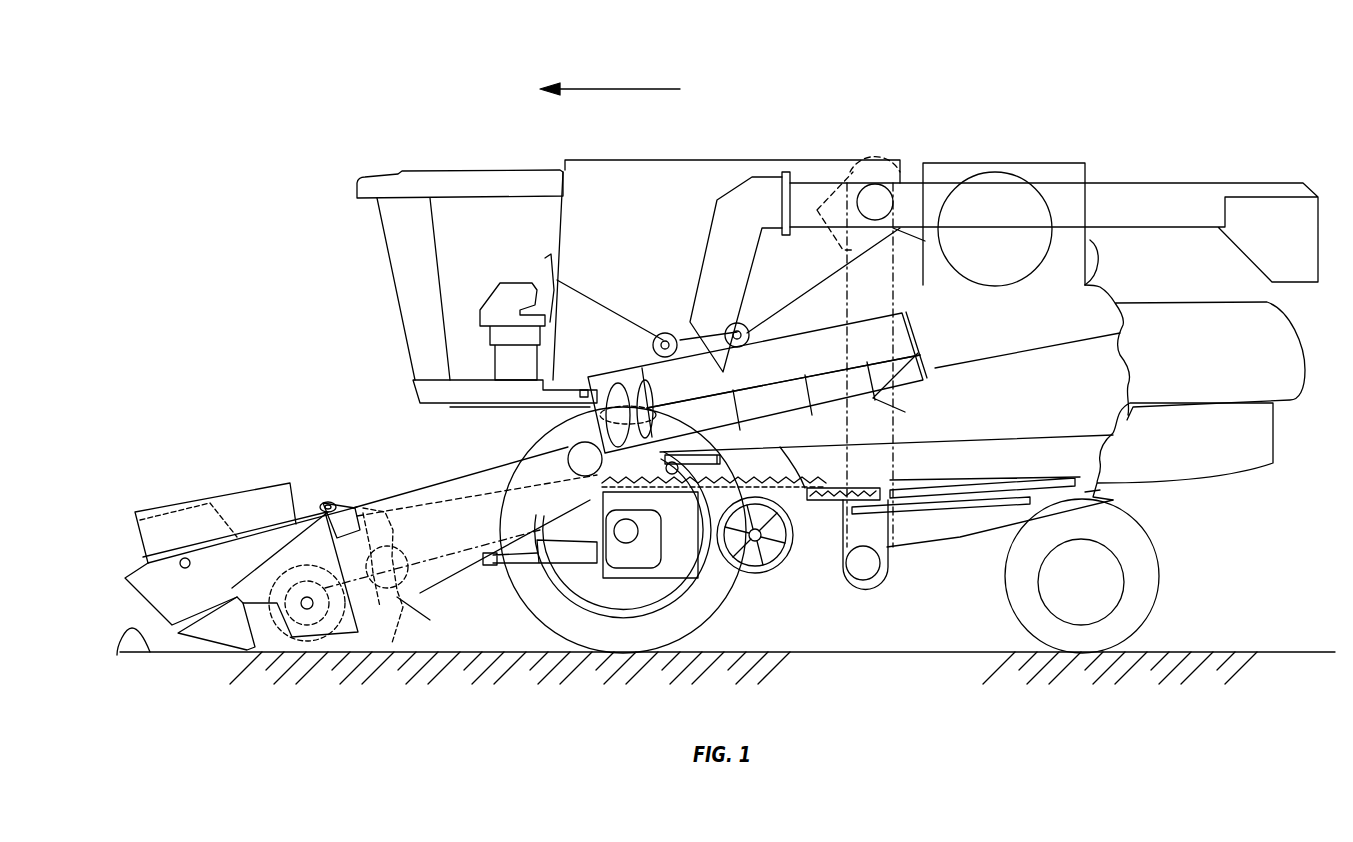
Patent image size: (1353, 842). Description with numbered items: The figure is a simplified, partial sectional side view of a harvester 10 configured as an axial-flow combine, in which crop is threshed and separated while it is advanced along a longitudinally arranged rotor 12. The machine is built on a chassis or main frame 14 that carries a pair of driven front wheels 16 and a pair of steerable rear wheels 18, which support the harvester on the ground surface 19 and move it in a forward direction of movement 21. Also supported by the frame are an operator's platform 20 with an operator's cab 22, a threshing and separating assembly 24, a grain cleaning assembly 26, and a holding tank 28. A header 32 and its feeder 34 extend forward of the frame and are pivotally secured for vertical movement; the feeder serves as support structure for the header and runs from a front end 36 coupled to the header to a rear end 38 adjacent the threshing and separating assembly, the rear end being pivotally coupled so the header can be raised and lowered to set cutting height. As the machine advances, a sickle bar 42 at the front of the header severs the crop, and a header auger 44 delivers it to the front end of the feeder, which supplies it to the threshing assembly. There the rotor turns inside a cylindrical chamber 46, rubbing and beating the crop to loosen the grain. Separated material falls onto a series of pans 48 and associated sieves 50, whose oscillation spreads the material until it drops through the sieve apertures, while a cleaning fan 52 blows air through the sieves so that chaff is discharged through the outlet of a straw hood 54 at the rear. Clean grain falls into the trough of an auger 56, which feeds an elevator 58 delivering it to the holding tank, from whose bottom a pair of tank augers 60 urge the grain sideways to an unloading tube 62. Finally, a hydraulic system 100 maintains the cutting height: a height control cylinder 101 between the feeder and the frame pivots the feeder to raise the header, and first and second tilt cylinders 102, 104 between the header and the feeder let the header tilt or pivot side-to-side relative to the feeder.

The harvester 10 is at (405, 120).
The rotor 12 is at (620, 392).
The chassis or main frame 14 is at (1090, 493).
The front wheels 16 is at (563, 620).
The rear wheels 18 is at (1153, 591).
The ground surface 19 is at (117, 658).
The operator's platform 20 is at (415, 392).
The forward direction of movement 21 is at (612, 89).
The operator's cab 22 is at (413, 284).
The threshing and separating assembly 24 is at (757, 382).
The grain cleaning assembly 26 is at (828, 583).
The holding tank 28 is at (655, 162).
The header 32 is at (178, 488).
The feeder 34 is at (388, 485).
The front end of the feeder 36 is at (325, 553).
The rear end of the feeder 38 is at (566, 433).
The sickle bar 42 is at (187, 635).
The header auger 44 is at (285, 641).
The cylindrical chamber 46 is at (805, 341).
The pans 48 is at (785, 481).
The sieves 50 is at (897, 483).
The cleaning fan 52 is at (768, 565).
The straw hood 54 is at (1288, 370).
The auger 56 is at (866, 575).
The elevator 58 is at (896, 268).
The tank augers 60 is at (664, 333).
The unloading tube 62 is at (1150, 195).
The hydraulic system 100 is at (395, 597).
The height control cylinder 101 is at (497, 565).
The first tilt cylinder 102 is at (407, 624).
The second tilt cylinder 104 is at (392, 643).